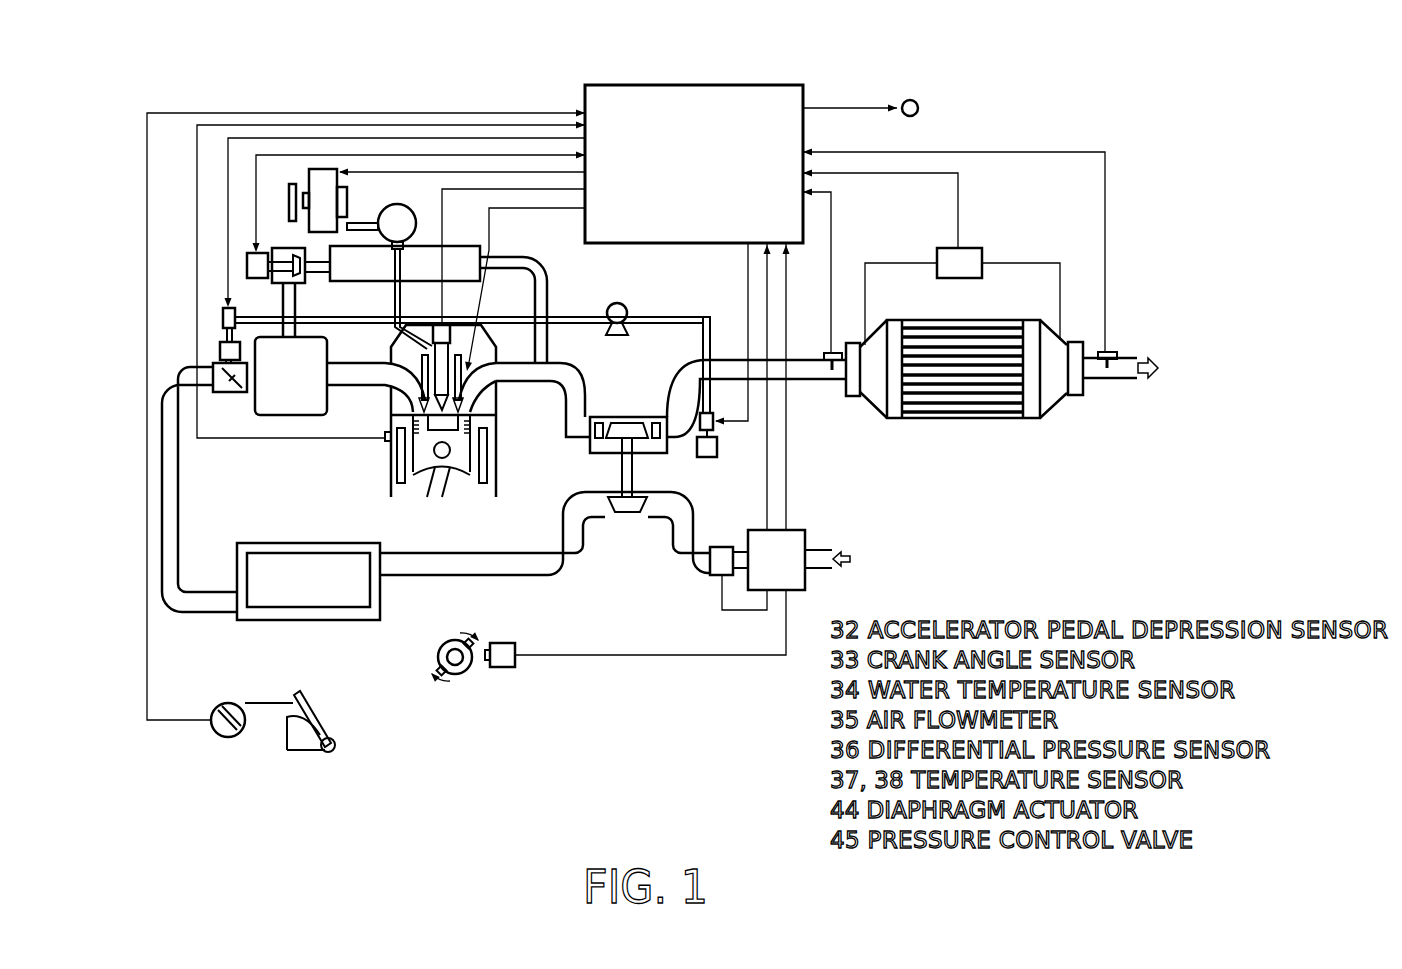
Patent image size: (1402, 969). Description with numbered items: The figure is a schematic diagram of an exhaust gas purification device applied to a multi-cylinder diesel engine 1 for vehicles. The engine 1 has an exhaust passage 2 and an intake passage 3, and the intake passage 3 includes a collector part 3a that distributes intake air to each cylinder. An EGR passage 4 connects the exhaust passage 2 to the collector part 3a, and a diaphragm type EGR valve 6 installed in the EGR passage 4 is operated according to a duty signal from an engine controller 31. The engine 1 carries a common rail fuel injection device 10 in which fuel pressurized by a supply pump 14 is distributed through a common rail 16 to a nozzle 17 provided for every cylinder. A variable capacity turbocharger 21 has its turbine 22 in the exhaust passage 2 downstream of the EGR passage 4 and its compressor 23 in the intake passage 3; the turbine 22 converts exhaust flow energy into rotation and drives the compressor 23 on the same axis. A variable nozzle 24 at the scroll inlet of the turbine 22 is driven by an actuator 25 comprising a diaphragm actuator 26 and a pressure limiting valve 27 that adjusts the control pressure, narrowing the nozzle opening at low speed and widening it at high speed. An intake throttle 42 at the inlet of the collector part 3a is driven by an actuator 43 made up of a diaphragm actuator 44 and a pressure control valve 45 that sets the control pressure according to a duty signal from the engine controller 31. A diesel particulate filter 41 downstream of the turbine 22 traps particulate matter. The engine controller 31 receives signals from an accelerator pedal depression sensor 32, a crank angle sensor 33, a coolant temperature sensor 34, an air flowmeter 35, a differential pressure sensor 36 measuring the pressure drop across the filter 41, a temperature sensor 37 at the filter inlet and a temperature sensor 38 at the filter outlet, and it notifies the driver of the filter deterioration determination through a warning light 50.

The diesel engine 1 is at (506, 496).
The exhaust passage 2 is at (584, 382).
The intake passage 3 is at (370, 364).
The collector part 3a is at (327, 345).
The EGR passage 4 is at (548, 283).
The EGR valve 6 is at (288, 268).
The common rail fuel injection device 10 is at (370, 210).
The supply pump 14 is at (323, 176).
The common rail 16 is at (403, 212).
The nozzle 17 is at (452, 333).
The variable capacity turbocharger 21 is at (643, 522).
The turbine 22 is at (620, 443).
The compressor 23 is at (621, 514).
The variable nozzle 24 is at (590, 432).
The actuator 25 is at (727, 440).
The diaphragm actuator 26 is at (698, 457).
The pressure limiting valve 27 is at (714, 414).
The engine controller 31 is at (688, 85).
The accelerator pedal depression sensor 32 is at (218, 728).
The crank angle sensor 33 is at (502, 668).
The coolant temperature sensor 34 is at (387, 443).
The air flowmeter 35 is at (720, 578).
The differential pressure sensor 36 is at (975, 252).
The temperature sensor 37 is at (826, 350).
The temperature sensor 38 is at (1121, 348).
The diesel particulate filter 41 is at (1000, 413).
The intake throttle 42 is at (213, 375).
The actuator 43 is at (208, 333).
The diaphragm actuator 44 is at (220, 352).
The pressure control valve 45 is at (222, 318).
The warning light 50 is at (918, 108).